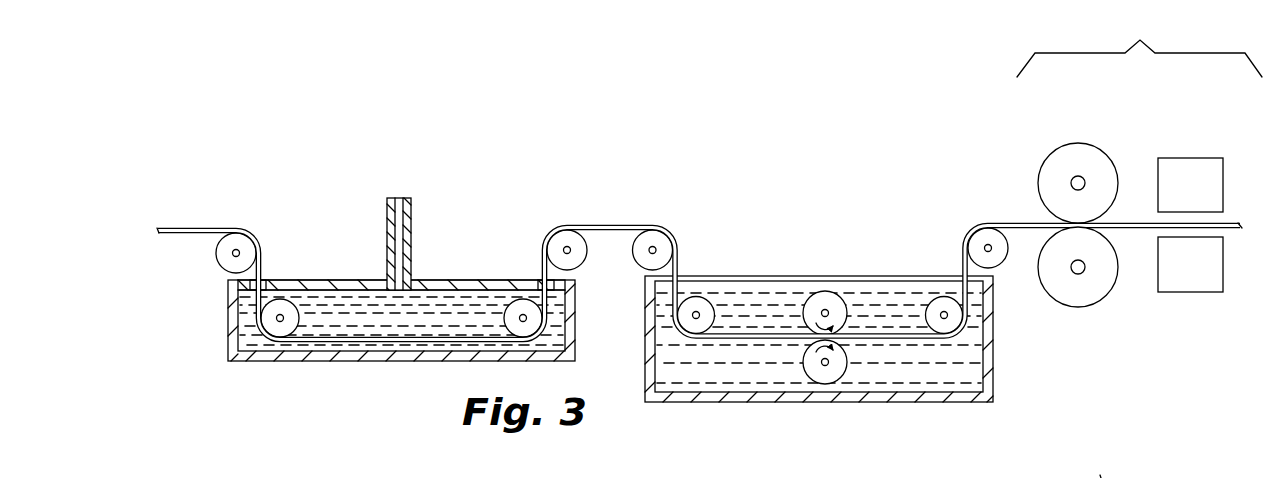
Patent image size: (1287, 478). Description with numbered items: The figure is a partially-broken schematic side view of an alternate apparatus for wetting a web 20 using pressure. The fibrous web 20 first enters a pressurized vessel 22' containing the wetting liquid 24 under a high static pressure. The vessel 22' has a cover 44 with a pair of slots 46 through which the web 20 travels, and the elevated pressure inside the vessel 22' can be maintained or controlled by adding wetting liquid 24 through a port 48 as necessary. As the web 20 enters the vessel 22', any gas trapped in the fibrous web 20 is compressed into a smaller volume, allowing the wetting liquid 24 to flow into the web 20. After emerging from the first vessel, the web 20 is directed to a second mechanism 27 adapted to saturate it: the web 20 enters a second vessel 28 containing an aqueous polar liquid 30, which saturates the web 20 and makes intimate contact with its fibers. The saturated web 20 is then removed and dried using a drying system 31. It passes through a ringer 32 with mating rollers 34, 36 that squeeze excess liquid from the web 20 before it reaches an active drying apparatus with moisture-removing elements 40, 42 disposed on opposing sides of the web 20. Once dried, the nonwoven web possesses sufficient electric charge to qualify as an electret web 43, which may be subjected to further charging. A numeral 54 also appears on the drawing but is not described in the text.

The web 20 is at (190, 226).
The pressurized vessel 22' is at (370, 320).
The wetting liquid 24 is at (323, 298).
The second mechanism 27 is at (837, 202).
The second vessel 28 is at (993, 370).
The aqueous polar liquid 30 is at (905, 362).
The drying system 31 is at (1139, 183).
The ringer 32 is at (1110, 127).
The roller 34 is at (1071, 153).
The roller 36 is at (1080, 295).
The moisture-removing element 40 is at (1176, 198).
The moisture-removing element 42 is at (1176, 278).
The electret web 43 is at (1238, 221).
The cover 44 is at (483, 283).
The slots 46 is at (268, 285).
The port 48 is at (412, 219).
The take-up station 54 is at (1102, 463).